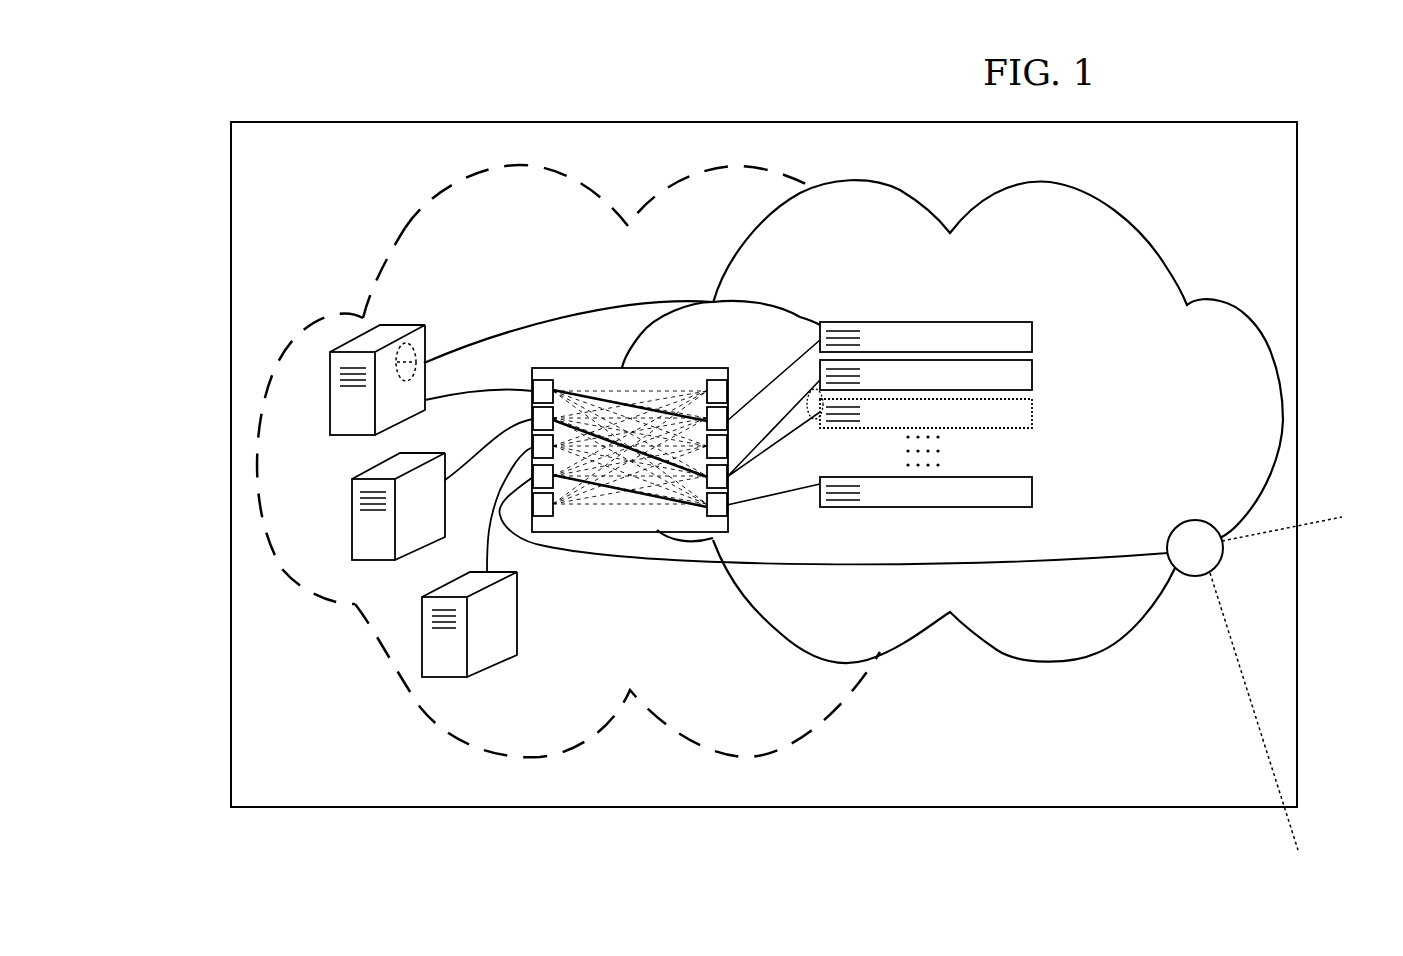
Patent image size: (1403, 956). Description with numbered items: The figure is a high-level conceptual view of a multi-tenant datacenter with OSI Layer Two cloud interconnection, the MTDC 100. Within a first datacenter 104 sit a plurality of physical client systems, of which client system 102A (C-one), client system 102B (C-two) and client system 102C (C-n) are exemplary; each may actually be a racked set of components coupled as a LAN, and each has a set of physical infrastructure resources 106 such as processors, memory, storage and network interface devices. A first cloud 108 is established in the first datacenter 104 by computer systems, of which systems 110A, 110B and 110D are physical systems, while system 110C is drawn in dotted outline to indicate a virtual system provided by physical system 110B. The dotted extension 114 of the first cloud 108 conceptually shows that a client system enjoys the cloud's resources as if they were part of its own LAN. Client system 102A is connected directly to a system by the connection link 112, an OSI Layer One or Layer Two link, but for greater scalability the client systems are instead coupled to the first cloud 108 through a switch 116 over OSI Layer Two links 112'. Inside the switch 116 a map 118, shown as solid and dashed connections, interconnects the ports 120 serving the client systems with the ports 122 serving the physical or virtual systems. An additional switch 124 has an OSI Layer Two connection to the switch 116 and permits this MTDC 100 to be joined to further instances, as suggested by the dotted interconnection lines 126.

The multi-tenant datacenter with OSI Layer 2 cloud interconnection 100 is at (1222, 110).
The first datacenter 104 is at (833, 122).
The first cloud 108 is at (1148, 220).
The dotted extension 114 is at (400, 220).
The client system 102A is at (393, 333).
The client system 102B is at (358, 532).
The client system 102C is at (468, 664).
The physical infrastructure resources 106 is at (416, 353).
The L1/L2 connection link 112 is at (568, 304).
The L2 links 112' is at (479, 392).
The switch 116 is at (582, 364).
The map 118 is at (678, 380).
The ports 120 is at (547, 543).
The ports 122 is at (723, 515).
The physical system 110A is at (966, 337).
The physical system 110B is at (966, 375).
The virtual system 110C is at (959, 408).
The physical system 110D is at (966, 492).
The additional switch 124 is at (1172, 520).
The dotted interconnection lines 126 is at (1308, 529).